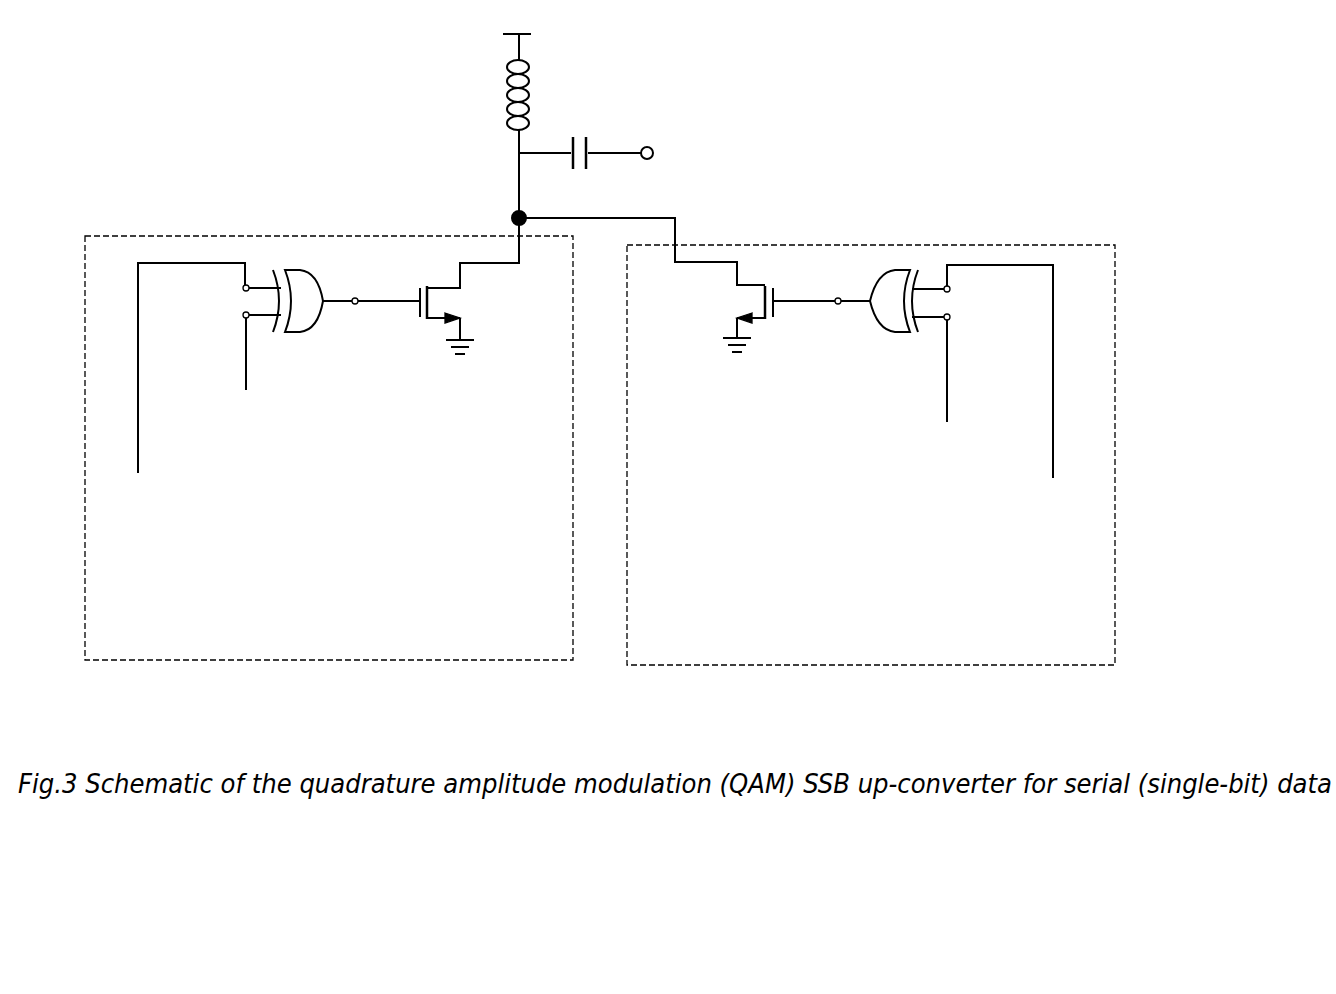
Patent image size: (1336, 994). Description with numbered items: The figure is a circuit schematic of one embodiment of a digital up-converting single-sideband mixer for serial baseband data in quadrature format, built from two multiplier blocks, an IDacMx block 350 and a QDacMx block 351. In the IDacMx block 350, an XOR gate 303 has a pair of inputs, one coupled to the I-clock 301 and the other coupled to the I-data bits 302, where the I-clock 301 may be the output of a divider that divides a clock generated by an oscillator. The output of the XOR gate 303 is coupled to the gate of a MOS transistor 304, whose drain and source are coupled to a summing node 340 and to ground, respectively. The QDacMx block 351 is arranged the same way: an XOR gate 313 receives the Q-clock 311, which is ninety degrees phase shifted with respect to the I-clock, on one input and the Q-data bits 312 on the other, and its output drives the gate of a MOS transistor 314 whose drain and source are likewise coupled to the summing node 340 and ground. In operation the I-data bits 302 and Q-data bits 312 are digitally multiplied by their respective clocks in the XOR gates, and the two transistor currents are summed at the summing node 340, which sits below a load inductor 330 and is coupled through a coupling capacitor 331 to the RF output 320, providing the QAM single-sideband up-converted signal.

The I-clock 301 is at (189, 382).
The I-data bits 302 is at (259, 446).
The XOR gate 303 is at (302, 345).
The MOS transistor 304 is at (425, 338).
The Q-clock 311 is at (1011, 372).
The Q-data bits 312 is at (954, 468).
The XOR gate 313 is at (882, 337).
The MOS transistor 314 is at (757, 335).
The RF output 320 is at (754, 154).
The load inductor L 330 is at (589, 126).
The coupling capacitor Cc 331 is at (591, 139).
The summing node 340 is at (509, 216).
The IDacMx block 350 is at (125, 648).
The QDacMx block 351 is at (940, 660).